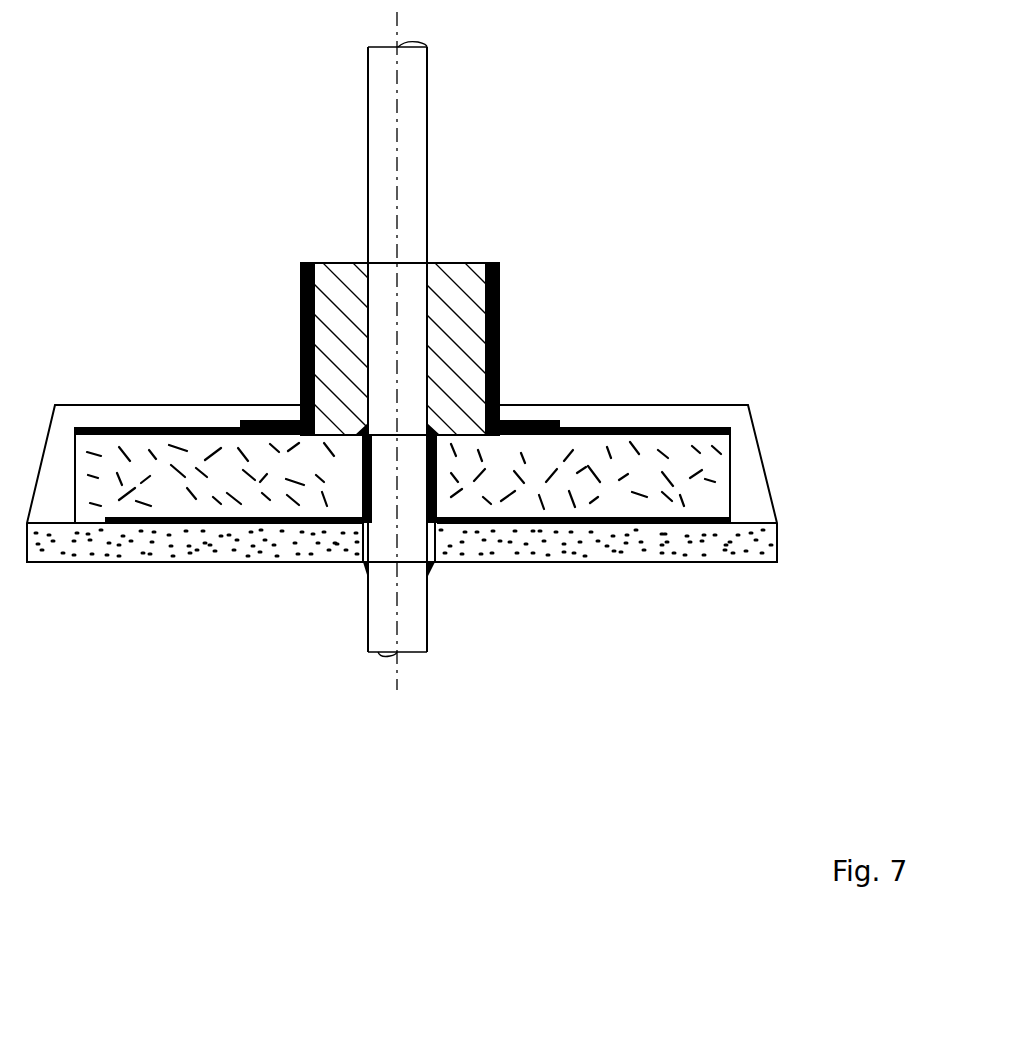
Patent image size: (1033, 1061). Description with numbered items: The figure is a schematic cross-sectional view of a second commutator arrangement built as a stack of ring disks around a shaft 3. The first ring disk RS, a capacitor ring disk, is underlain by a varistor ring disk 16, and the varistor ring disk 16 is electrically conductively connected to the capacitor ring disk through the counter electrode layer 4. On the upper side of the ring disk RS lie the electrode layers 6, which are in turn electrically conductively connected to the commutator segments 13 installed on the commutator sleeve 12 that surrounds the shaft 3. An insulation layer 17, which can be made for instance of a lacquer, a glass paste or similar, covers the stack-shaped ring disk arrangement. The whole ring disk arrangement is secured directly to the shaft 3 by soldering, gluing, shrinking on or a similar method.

The shaft 3 is at (403, 107).
The counter electrode layer 4 is at (498, 553).
The electrode layers 6 is at (162, 427).
The commutator sleeve 12 is at (450, 273).
The commutator segments 13 is at (498, 310).
The varistor ring disk 16 is at (584, 540).
The insulation layer 17 is at (83, 420).
The first ring disk RS is at (695, 456).